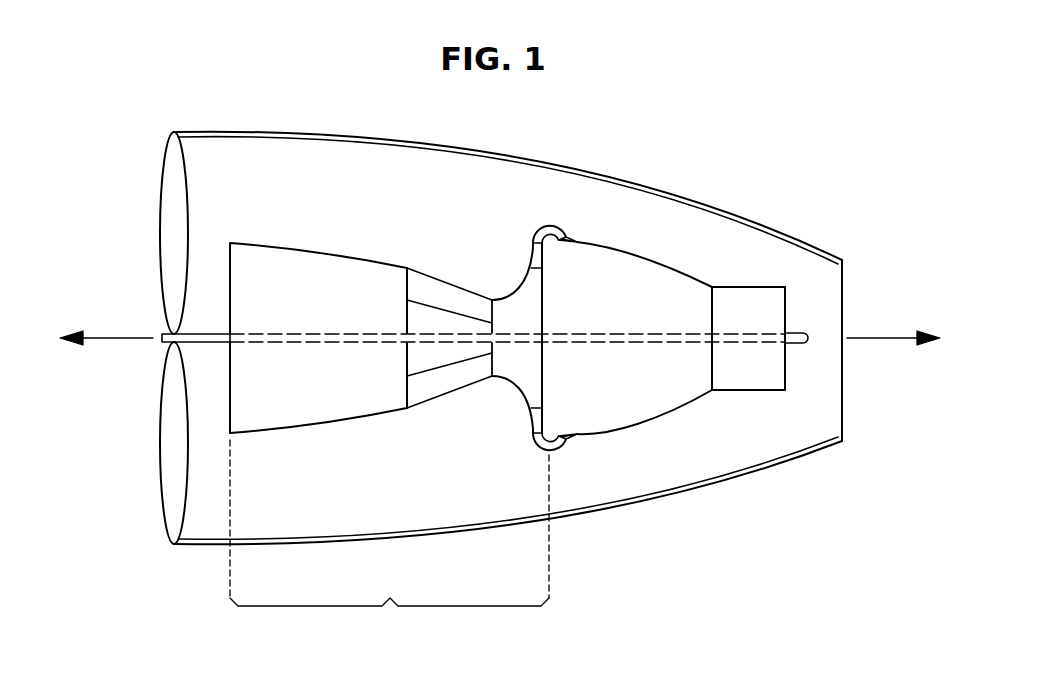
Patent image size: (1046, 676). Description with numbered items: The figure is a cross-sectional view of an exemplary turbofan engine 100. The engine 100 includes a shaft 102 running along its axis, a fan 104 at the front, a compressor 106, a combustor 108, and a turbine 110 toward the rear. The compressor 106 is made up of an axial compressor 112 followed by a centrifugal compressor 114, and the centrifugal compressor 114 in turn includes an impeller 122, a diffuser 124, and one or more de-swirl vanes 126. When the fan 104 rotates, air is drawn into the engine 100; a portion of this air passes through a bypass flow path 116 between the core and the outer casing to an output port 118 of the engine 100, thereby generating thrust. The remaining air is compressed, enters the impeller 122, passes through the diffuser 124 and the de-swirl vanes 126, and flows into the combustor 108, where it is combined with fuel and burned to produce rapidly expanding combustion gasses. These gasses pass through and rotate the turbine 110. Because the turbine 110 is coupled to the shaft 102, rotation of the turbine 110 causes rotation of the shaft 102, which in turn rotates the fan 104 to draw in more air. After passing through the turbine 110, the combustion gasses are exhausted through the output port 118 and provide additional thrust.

The engine 100 is at (737, 139).
The shaft 102 is at (209, 336).
The fan 104 is at (171, 211).
The compressor 106 is at (389, 540).
The combustor 108 is at (648, 400).
The turbine 110 is at (757, 395).
The axial compressor 112 is at (312, 408).
The centrifugal compressor 114 is at (532, 392).
The bypass flow path 116 is at (262, 503).
The output port 118 is at (820, 377).
The impeller 122 is at (505, 368).
The diffuser 124 is at (557, 451).
The de-swirl vanes 126 is at (573, 443).